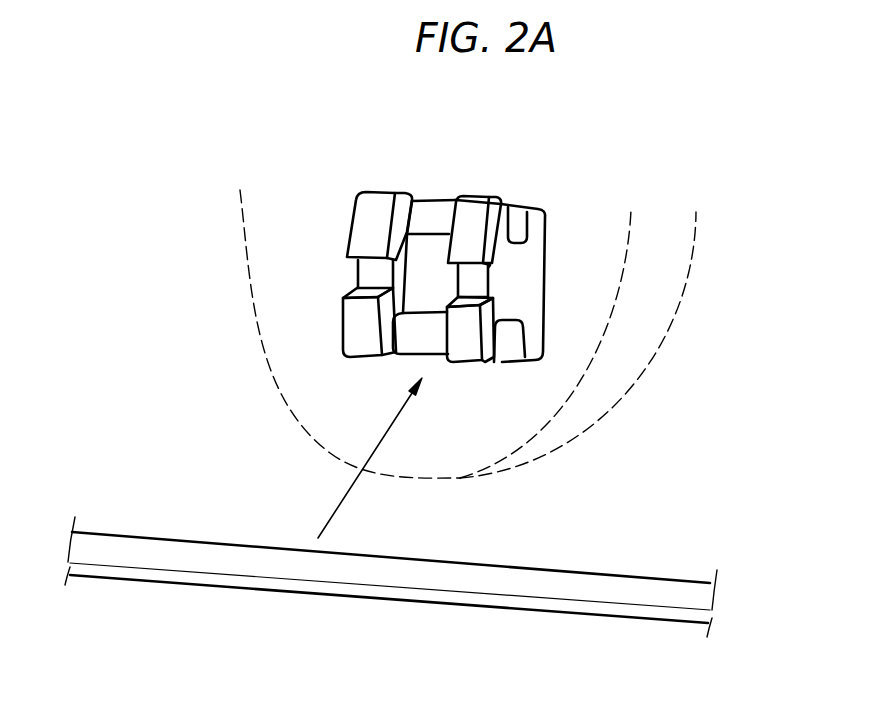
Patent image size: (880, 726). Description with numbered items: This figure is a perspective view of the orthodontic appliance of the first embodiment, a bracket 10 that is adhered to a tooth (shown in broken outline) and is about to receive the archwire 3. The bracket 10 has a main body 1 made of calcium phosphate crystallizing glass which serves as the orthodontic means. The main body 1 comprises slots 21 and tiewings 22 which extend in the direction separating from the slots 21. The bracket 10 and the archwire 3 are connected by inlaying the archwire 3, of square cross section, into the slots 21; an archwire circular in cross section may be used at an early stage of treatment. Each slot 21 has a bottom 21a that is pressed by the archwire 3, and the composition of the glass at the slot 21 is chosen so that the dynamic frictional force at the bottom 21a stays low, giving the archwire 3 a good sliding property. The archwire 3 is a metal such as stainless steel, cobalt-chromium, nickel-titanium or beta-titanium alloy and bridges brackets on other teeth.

The main body 1 is at (627, 131).
The bracket 10 is at (353, 187).
The slot 21 is at (497, 277).
The bottom of the slot 21a is at (487, 293).
The tiewing 22 is at (520, 210).
The archwire 3 is at (278, 588).